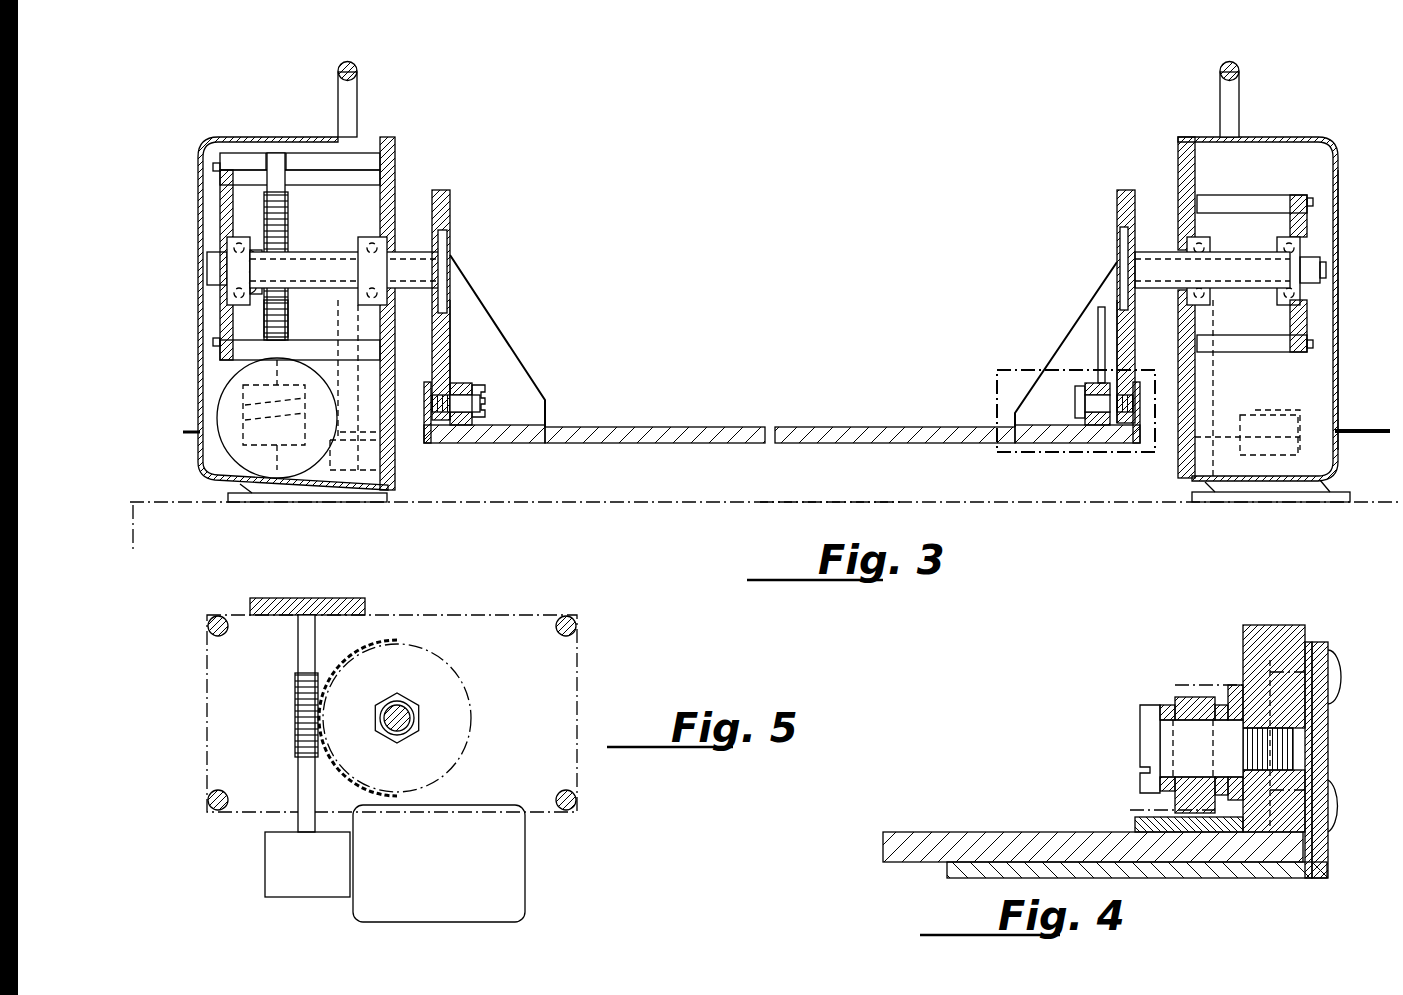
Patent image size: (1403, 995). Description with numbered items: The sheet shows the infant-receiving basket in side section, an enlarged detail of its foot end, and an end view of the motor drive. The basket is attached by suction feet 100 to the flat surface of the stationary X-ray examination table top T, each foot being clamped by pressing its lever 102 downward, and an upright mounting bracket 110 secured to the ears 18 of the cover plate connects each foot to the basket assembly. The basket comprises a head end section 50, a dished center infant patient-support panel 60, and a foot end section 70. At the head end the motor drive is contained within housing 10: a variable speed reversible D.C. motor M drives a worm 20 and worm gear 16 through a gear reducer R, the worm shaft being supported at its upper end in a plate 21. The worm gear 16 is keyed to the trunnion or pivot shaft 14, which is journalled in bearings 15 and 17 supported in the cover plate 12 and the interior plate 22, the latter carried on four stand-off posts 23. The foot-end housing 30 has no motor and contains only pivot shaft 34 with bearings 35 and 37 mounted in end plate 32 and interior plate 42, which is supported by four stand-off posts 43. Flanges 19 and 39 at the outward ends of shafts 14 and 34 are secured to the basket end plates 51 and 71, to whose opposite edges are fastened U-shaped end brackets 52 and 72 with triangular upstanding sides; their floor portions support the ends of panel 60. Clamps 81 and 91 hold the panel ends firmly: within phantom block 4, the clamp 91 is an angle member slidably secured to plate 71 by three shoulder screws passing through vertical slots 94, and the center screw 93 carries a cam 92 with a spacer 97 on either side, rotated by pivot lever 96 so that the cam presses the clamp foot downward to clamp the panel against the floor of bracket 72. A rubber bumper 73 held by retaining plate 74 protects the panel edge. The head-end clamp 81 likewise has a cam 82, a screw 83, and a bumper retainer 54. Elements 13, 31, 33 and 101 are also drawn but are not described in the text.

In FIG. 3, the housing 10 is at (392, 132).
In FIG. 3, the cover plate 12 is at (397, 150).
In FIG. 3, the support post 13 is at (339, 69).
In FIG. 3, the trunnion or pivot shaft 14 is at (405, 265).
In FIG. 5, the trunnion or pivot shaft 14 is at (416, 728).
In FIG. 3, the bearing 15 is at (386, 292).
In FIG. 3, the worm gear 16 is at (286, 324).
In FIG. 5, the worm gear 16 is at (466, 672).
In FIG. 3, the bearing 17 is at (235, 270).
In FIG. 3, the ears 18 is at (253, 278).
In FIG. 5, the ears 18 is at (408, 712).
In FIG. 3, the flange 19 is at (446, 238).
In FIG. 3, the worm 20 is at (288, 240).
In FIG. 5, the worm 20 is at (296, 708).
In FIG. 3, the plate 21 is at (228, 160).
In FIG. 5, the plate 21 is at (350, 597).
In FIG. 3, the plate 22 is at (226, 215).
In FIG. 5, the plate 22 is at (470, 612).
In FIG. 3, the stand-off posts 23 is at (372, 175).
In FIG. 5, the stand-off posts 23 is at (577, 628).
In FIG. 3, the foot-end housing 30 is at (1290, 132).
In FIG. 3, the housing wall 31 is at (1339, 152).
In FIG. 3, the end plate 32 is at (1182, 150).
In FIG. 3, the support post 33 is at (1240, 68).
In FIG. 3, the pivot shaft 34 is at (1155, 262).
In FIG. 3, the bearing 35 is at (1207, 252).
In FIG. 3, the bearing 37 is at (1305, 247).
In FIG. 3, the flange 39 is at (1121, 240).
In FIG. 3, the interior plate 42 is at (1310, 320).
In FIG. 3, the stand-off posts 43 is at (1228, 200).
In FIG. 3, the head end section 50 is at (456, 193).
In FIG. 3, the basket end plate 51 is at (436, 350).
In FIG. 3, the U-shaped end bracket 52 is at (483, 318).
In FIG. 3, the bumper retainer 54 is at (426, 405).
In FIG. 3, the center infant patient-support panel 60 is at (665, 444).
In FIG. 4, the center infant patient-support panel 60 is at (985, 840).
In FIG. 3, the foot end section 70 is at (1112, 195).
In FIG. 3, the basket end plate 71 is at (1134, 350).
In FIG. 4, the basket end plate 71 is at (1272, 635).
In FIG. 3, the U-shaped end bracket 72 is at (1090, 298).
In FIG. 4, the U-shaped end bracket 72 is at (1182, 878).
In FIG. 4, the rubber bumper 73 is at (1312, 718).
In FIG. 3, the retaining plate 74 is at (1138, 400).
In FIG. 4, the retaining plate 74 is at (1322, 850).
In FIG. 3, the clamp 81 is at (456, 392).
In FIG. 3, the cam 82 is at (472, 390).
In FIG. 3, the screw 83 is at (489, 395).
In FIG. 4, the clamp 91 is at (1237, 695).
In FIG. 3, the cam 92 is at (1092, 386).
In FIG. 4, the cam 92 is at (1194, 708).
In FIG. 3, the center screw 93 is at (1076, 400).
In FIG. 4, the center screw 93 is at (1145, 728).
In FIG. 4, the vertical slots 94 is at (1242, 783).
In FIG. 3, the pivot lever 96 is at (1098, 330).
In FIG. 4, the spacer 97 is at (1218, 708).
In FIG. 3, the suction feet 100 is at (276, 503).
In FIG. 3, the pad 101 is at (282, 500).
In FIG. 3, the levers 102 is at (190, 433).
In FIG. 3, the upright mounting bracket 110 is at (385, 452).
In FIG. 3, the motor M is at (236, 452).
In FIG. 5, the motor M is at (492, 870).
In FIG. 3, the gear reducer R is at (240, 398).
In FIG. 5, the gear reducer R is at (290, 860).
In FIG. 3, the X-ray examination table top T is at (792, 500).
In FIG. 3, the phantom block 4 is at (992, 367).